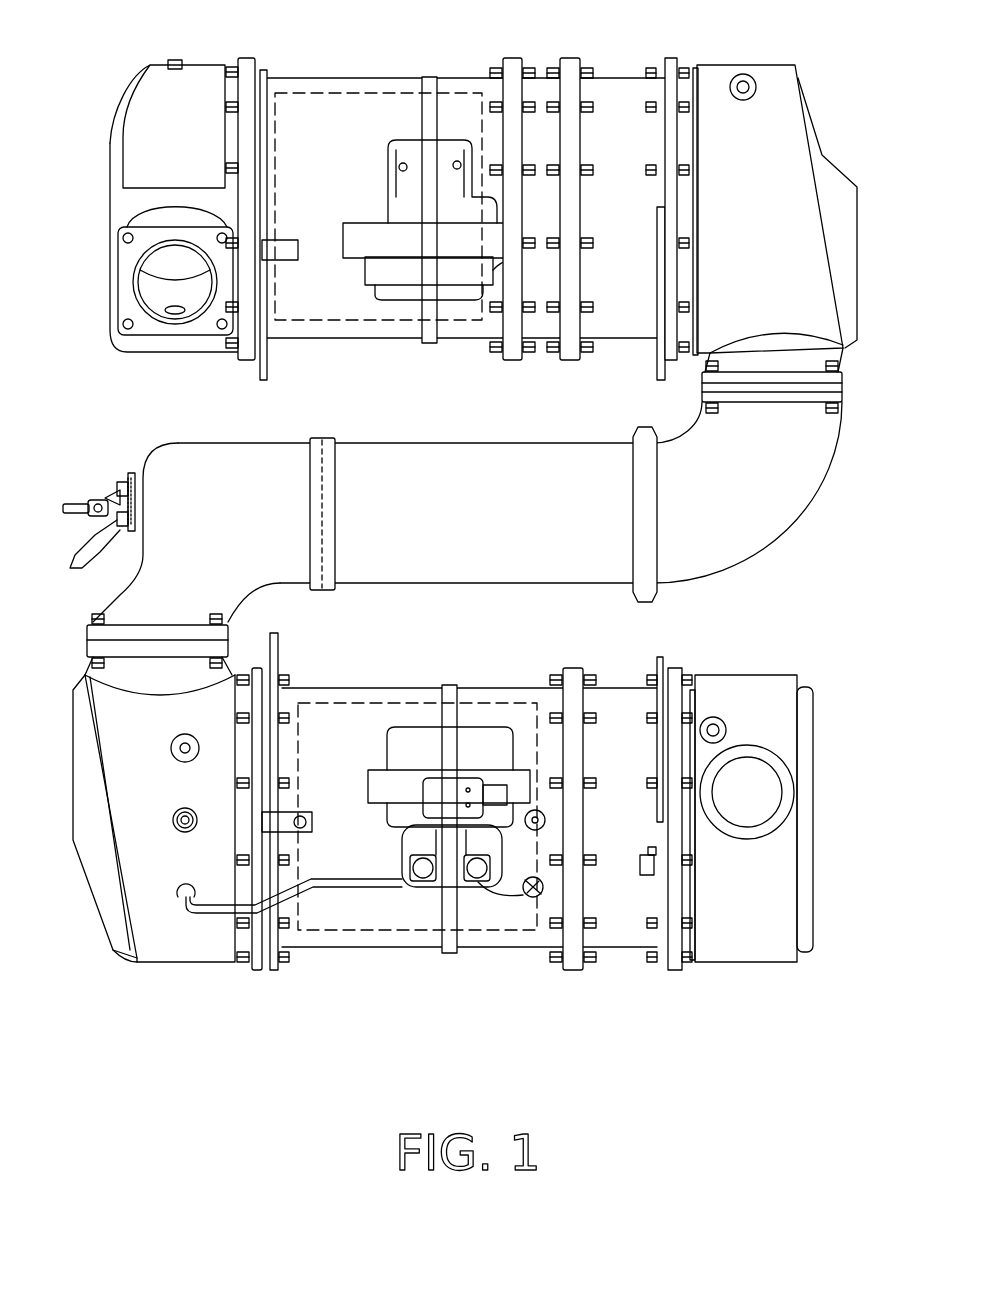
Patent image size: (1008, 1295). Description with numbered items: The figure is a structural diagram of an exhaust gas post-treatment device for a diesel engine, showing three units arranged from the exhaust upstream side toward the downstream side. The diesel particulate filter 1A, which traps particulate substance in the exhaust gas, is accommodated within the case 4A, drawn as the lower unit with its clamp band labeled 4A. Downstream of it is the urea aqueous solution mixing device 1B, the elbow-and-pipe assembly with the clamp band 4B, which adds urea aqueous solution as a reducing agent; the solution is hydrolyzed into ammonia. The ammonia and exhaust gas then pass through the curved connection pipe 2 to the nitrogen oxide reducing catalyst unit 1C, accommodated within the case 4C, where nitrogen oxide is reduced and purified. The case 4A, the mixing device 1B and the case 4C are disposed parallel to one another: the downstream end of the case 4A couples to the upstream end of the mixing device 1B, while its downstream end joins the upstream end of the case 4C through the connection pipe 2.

The diesel particulate filter (DPF) 1A is at (482, 700).
The urea aqueous solution mixing device 1B is at (253, 435).
The nitrogen oxide reducing catalyst unit (SCR) 1C is at (378, 93).
The connection pipe 2 is at (768, 537).
The case 4A is at (403, 668).
The clamp band of connecting pipe 4B is at (533, 443).
The case 4C is at (317, 78).